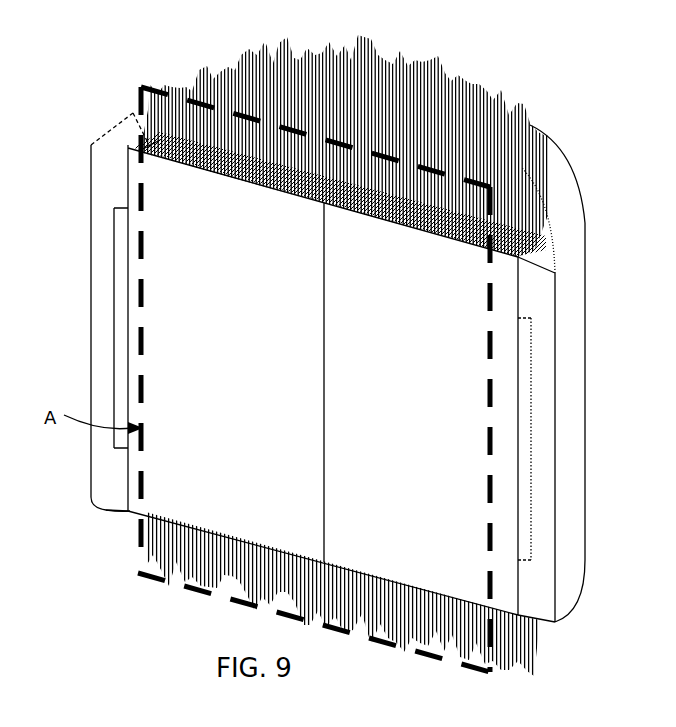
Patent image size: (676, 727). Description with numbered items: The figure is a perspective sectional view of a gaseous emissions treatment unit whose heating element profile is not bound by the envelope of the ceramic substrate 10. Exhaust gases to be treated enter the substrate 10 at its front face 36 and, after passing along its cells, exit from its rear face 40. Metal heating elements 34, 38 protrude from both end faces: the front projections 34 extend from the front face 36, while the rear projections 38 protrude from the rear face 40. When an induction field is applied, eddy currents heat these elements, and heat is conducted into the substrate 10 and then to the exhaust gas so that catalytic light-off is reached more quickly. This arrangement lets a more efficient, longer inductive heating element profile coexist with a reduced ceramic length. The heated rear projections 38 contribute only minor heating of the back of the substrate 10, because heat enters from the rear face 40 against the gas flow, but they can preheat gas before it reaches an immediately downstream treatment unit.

The substrate body 10 is at (236, 335).
The heating element projections 34 is at (510, 100).
The front face 36 is at (152, 150).
The rear projections 38 is at (505, 670).
The rear face 40 is at (138, 513).